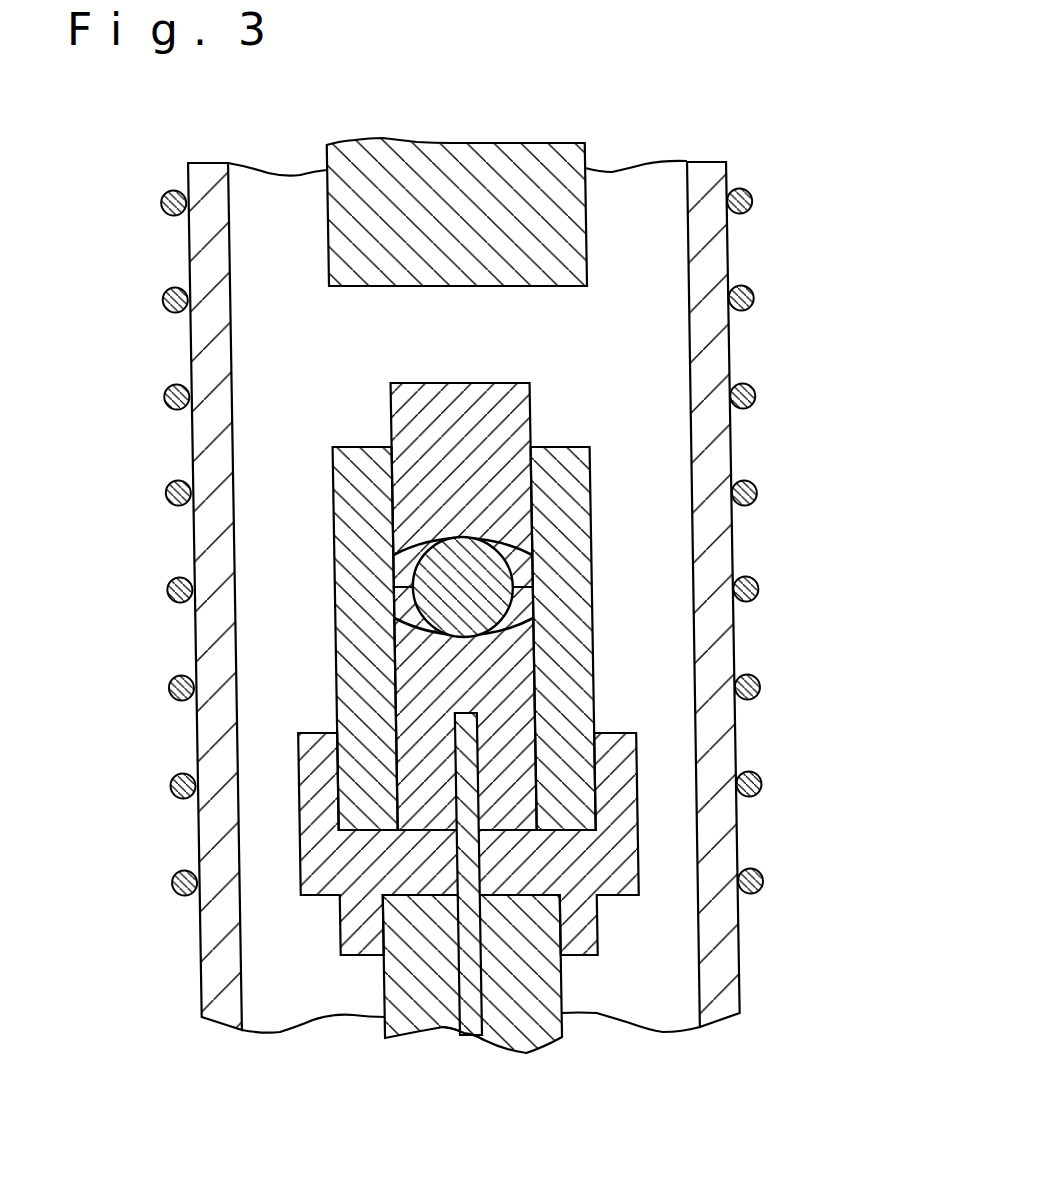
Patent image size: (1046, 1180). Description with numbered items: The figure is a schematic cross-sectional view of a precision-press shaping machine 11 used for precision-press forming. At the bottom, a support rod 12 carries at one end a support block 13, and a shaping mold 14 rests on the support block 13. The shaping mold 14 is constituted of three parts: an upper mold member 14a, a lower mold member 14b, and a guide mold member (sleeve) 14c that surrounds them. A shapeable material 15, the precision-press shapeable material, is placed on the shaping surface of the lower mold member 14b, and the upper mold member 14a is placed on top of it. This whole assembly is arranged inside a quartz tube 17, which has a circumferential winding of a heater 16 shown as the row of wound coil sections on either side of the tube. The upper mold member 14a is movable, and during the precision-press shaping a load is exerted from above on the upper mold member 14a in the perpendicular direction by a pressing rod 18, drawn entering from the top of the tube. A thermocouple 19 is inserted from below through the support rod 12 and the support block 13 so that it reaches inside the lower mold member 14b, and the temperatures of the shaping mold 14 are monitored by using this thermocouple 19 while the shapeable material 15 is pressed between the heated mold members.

The precision-press shaping machine 11 is at (763, 135).
The support rod 12 is at (550, 980).
The support block 13 is at (628, 858).
The shaping mold 14 is at (603, 606).
The upper mold member 14a is at (520, 407).
The lower mold member 14b is at (515, 795).
The guide mold member (sleeve) 14c is at (580, 688).
The shapeable material 15 is at (495, 588).
The heater 16 is at (162, 300).
The quartz tube 17 is at (190, 538).
The pressing rod 18 is at (585, 243).
The thermocouple 19 is at (470, 1022).